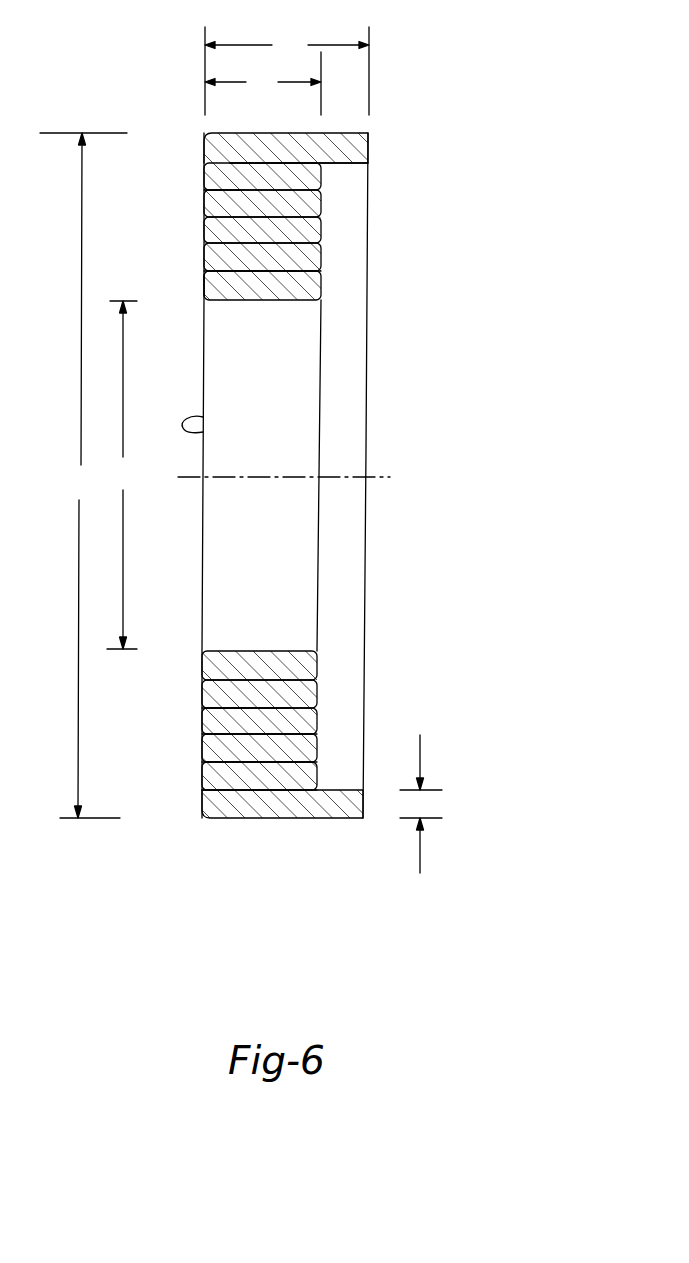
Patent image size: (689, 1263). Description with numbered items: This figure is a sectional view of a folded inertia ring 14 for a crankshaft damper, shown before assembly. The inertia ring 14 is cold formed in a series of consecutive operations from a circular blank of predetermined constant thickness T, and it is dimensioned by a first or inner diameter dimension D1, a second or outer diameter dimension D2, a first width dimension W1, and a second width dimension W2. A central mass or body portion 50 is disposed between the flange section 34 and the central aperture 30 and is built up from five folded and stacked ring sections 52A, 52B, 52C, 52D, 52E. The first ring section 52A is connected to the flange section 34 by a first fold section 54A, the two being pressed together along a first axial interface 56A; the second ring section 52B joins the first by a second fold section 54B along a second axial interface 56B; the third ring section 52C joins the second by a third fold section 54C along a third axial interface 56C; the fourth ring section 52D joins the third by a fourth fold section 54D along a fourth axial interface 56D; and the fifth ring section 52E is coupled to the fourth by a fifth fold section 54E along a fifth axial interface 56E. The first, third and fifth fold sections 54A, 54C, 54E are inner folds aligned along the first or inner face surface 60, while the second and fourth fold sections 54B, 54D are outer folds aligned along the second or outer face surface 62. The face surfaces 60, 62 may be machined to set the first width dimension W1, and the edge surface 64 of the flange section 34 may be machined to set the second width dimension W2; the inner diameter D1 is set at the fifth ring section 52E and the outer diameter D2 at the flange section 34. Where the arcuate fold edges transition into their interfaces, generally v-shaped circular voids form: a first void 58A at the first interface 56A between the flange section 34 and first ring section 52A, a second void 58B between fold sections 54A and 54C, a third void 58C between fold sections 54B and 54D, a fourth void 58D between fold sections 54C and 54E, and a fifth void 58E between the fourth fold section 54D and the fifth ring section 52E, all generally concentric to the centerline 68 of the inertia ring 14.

The inertia ring 14 is at (485, 159).
The central aperture 30 is at (296, 651).
The flange section 34 is at (350, 805).
The central mass or body portion 50 is at (328, 293).
The first ring section 52A is at (268, 178).
The second ring section 52B is at (268, 205).
The third ring section 52C is at (268, 232).
The fourth ring section 52D is at (265, 260).
The fifth ring section 52E is at (298, 300).
The first fold section 54A is at (203, 788).
The second fold section 54B is at (313, 763).
The third fold section 54C is at (203, 738).
The fourth fold section 54D is at (316, 707).
The fifth fold section 54E is at (204, 283).
The first axial interface 56A is at (252, 790).
The second axial interface 56B is at (235, 763).
The third axial interface 56C is at (233, 734).
The fourth axial interface 56D is at (253, 708).
The fifth axial interface 56E is at (250, 273).
The first void 58A is at (323, 165).
The second void 58B is at (204, 190).
The third void 58C is at (312, 735).
The fourth void 58D is at (203, 707).
The fifth void 58E is at (318, 271).
The first or inner face surface 60 is at (203, 432).
The second or outer face surface 62 is at (320, 395).
The edge surface 64 is at (367, 144).
The centerline 68 is at (380, 477).
The first width dimension W1 is at (263, 83).
The second width dimension W2 is at (287, 71).
The first or inner diameter dimension D1 is at (122, 475).
The second or outer diameter dimension D2 is at (83, 475).
The thickness T is at (432, 804).